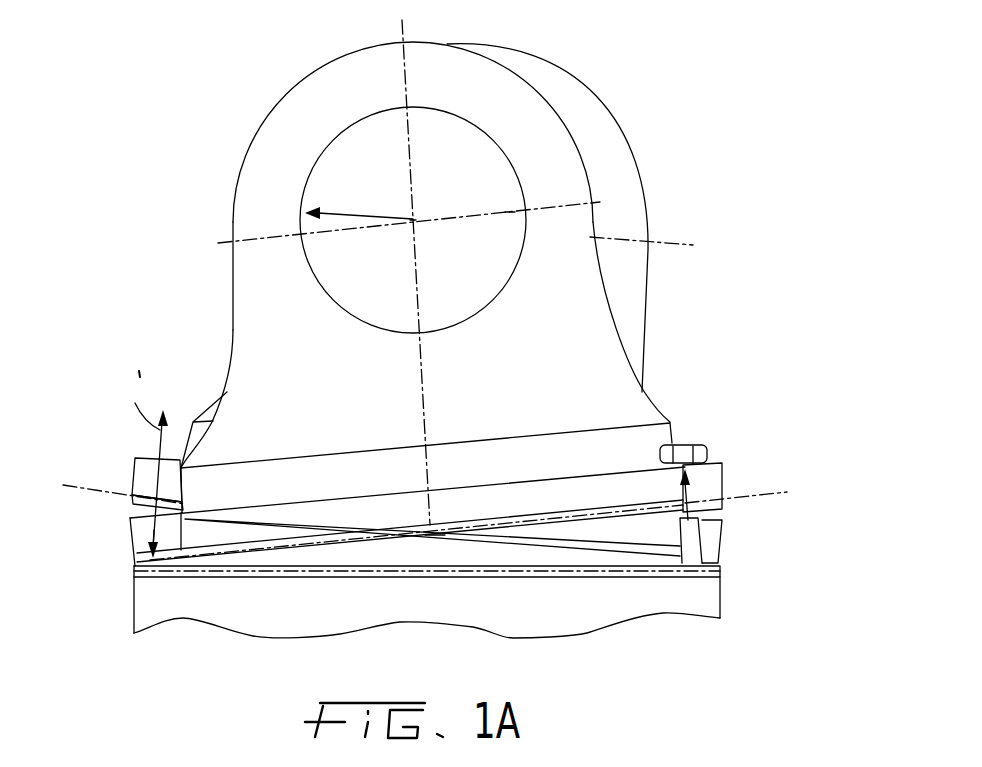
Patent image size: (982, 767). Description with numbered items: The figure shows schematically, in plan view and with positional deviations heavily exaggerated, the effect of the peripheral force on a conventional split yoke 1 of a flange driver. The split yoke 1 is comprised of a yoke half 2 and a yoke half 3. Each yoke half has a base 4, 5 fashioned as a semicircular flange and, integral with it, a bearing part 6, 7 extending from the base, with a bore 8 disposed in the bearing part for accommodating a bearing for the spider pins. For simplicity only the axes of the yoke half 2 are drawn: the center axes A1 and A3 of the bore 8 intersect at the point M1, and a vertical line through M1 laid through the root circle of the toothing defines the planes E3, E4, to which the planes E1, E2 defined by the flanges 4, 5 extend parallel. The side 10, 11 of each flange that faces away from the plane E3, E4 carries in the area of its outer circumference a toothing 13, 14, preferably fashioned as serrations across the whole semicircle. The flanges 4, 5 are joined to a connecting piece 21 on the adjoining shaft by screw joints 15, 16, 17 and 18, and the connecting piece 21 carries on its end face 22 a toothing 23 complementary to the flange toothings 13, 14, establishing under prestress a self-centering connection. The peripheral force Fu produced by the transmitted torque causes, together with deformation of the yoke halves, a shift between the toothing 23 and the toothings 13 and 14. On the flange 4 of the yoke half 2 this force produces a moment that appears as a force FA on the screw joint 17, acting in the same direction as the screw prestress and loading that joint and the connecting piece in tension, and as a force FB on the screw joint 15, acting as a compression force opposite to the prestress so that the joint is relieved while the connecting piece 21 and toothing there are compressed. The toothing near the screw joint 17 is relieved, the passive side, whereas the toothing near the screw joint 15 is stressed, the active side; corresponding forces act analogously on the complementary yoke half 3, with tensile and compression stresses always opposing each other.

The split yoke 1 is at (650, 93).
The yoke half 2 is at (120, 609).
The yoke half 3 is at (672, 328).
The base 4 is at (140, 542).
The base 5 is at (145, 457).
The bearing part 6 is at (262, 152).
The bearing part 7 is at (628, 163).
The bore 8 is at (441, 116).
The side of the flange 10 is at (327, 540).
The side of the flange 11 is at (533, 533).
The toothing 13 is at (288, 547).
The toothing 14 is at (598, 545).
The screw joint 15 is at (130, 520).
The screw joint 16 is at (433, 506).
The screw joint 17 is at (703, 452).
The screw joint 18 is at (136, 465).
The connecting piece 21 is at (378, 615).
The end face 22 is at (400, 558).
The toothing 23 is at (458, 571).
The center axis A1 is at (413, 147).
The center axis A3 is at (512, 212).
The intersection M1 is at (418, 222).
The plane E1 is at (775, 496).
The plane E2 is at (75, 485).
The plane E3 is at (575, 202).
The plane E4 is at (670, 245).
The peripheral force Fu is at (372, 214).
The force FA is at (686, 490).
The force FB is at (155, 532).